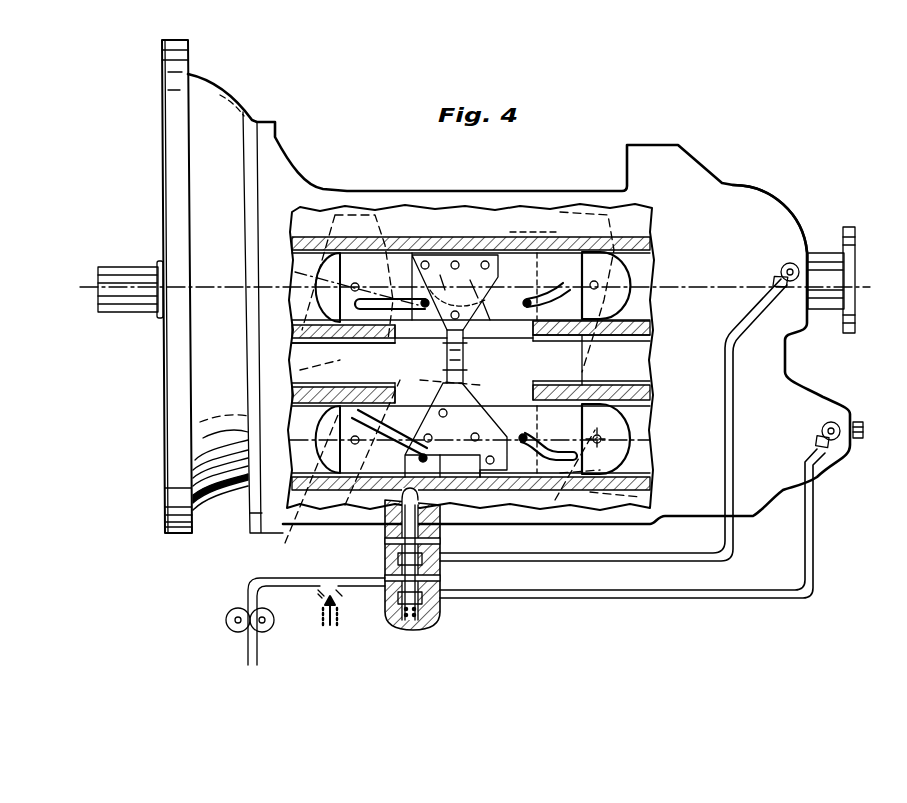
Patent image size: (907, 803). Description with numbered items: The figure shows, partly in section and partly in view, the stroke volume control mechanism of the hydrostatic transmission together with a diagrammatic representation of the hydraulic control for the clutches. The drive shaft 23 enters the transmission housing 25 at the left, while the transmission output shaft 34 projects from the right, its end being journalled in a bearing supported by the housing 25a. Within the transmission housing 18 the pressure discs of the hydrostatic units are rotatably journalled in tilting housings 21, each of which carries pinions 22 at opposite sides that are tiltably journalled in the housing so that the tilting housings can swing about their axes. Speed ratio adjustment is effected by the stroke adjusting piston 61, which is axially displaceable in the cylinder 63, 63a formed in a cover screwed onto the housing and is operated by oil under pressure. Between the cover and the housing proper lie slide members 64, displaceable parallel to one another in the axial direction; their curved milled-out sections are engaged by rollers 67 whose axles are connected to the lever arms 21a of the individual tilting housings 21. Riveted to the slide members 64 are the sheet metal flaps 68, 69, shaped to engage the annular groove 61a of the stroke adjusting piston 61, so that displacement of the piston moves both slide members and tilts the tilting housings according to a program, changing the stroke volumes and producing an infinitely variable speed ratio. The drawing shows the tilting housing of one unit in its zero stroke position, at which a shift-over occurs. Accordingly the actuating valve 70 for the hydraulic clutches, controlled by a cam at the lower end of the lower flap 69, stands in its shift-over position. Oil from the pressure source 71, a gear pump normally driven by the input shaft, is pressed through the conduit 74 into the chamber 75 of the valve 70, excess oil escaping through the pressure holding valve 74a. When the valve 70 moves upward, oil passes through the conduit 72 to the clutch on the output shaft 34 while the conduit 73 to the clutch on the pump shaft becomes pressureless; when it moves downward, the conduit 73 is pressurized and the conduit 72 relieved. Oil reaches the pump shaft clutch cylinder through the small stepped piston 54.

The transmission housing 18 is at (476, 191).
The tilting housing 21 is at (352, 218).
The lever arm 21a is at (543, 238).
The pinion 22 is at (640, 262).
The drive shaft 23 is at (120, 268).
The transmission housing 25 is at (222, 100).
The housing 25a is at (778, 213).
The transmission output shaft 34 is at (850, 278).
The stepped piston 54 is at (866, 427).
The stroke adjusting piston 61 is at (570, 365).
The annular groove 61a is at (447, 368).
The cylinder 63 is at (630, 352).
The cylinder 63a is at (292, 360).
The slide member 64 is at (562, 250).
The roller 67 is at (416, 330).
The sheet metal flap 68 is at (440, 252).
The sheet metal flap 69 is at (496, 480).
The actuating valve 70 is at (382, 520).
The pressure source 71 is at (226, 624).
The conduit 72 is at (735, 418).
The conduit 73 is at (588, 598).
The conduit 74 is at (290, 586).
The pressure holding valve 74a is at (335, 600).
The chamber 75 is at (440, 578).